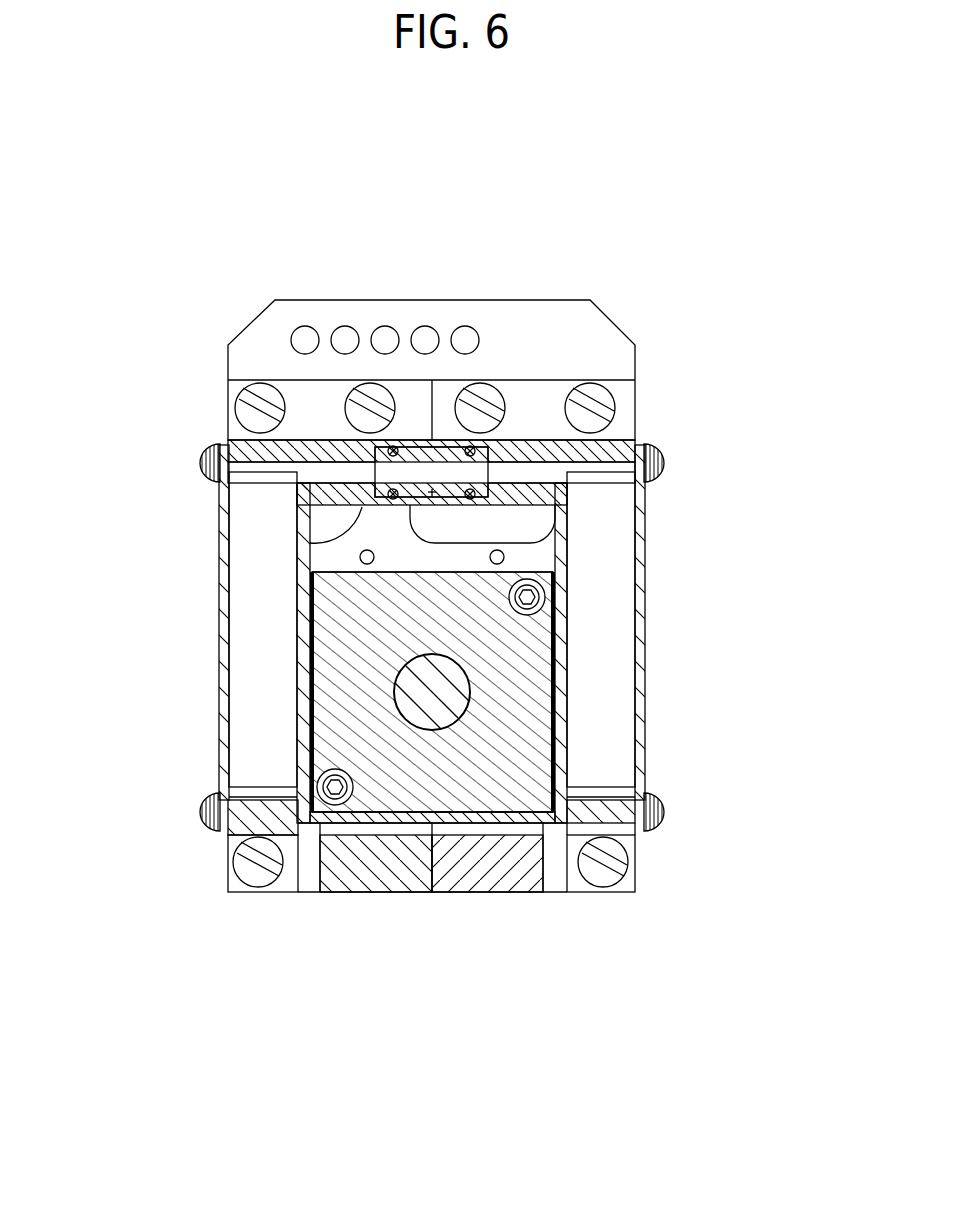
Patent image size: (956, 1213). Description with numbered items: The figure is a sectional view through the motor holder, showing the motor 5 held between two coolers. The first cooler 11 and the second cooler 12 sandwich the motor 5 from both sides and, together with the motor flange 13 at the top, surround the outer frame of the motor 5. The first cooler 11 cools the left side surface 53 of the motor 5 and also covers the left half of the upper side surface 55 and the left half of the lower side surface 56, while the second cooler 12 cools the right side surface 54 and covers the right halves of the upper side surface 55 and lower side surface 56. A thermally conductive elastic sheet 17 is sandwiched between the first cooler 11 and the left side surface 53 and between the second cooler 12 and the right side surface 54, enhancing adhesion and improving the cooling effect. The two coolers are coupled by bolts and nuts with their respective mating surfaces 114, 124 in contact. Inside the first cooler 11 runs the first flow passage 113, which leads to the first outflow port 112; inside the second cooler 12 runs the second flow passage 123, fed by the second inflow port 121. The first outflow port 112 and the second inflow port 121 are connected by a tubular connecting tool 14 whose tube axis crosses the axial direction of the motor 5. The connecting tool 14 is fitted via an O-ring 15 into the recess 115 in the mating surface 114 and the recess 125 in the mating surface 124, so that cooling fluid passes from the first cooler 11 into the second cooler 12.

The motor 5 is at (435, 760).
The first cooler 11 is at (245, 818).
The second cooler 12 is at (612, 822).
The motor flange 13 is at (622, 338).
The connecting tool 14 is at (430, 458).
The O-ring 15 is at (467, 448).
The thermally conductive elastic sheet 17 is at (303, 667).
The left side surface 53 is at (308, 720).
The right side surface 54 is at (558, 712).
The upper side surface 55 is at (487, 573).
The lower side surface 56 is at (480, 812).
The first outflow port 112 is at (365, 345).
The first flow passage 113 is at (247, 553).
The mating surface 114 is at (378, 507).
The recess 115 is at (376, 500).
The second inflow port 121 is at (500, 472).
The second flow passage 123 is at (610, 600).
The mating surface 124 is at (470, 508).
The recess 125 is at (488, 488).